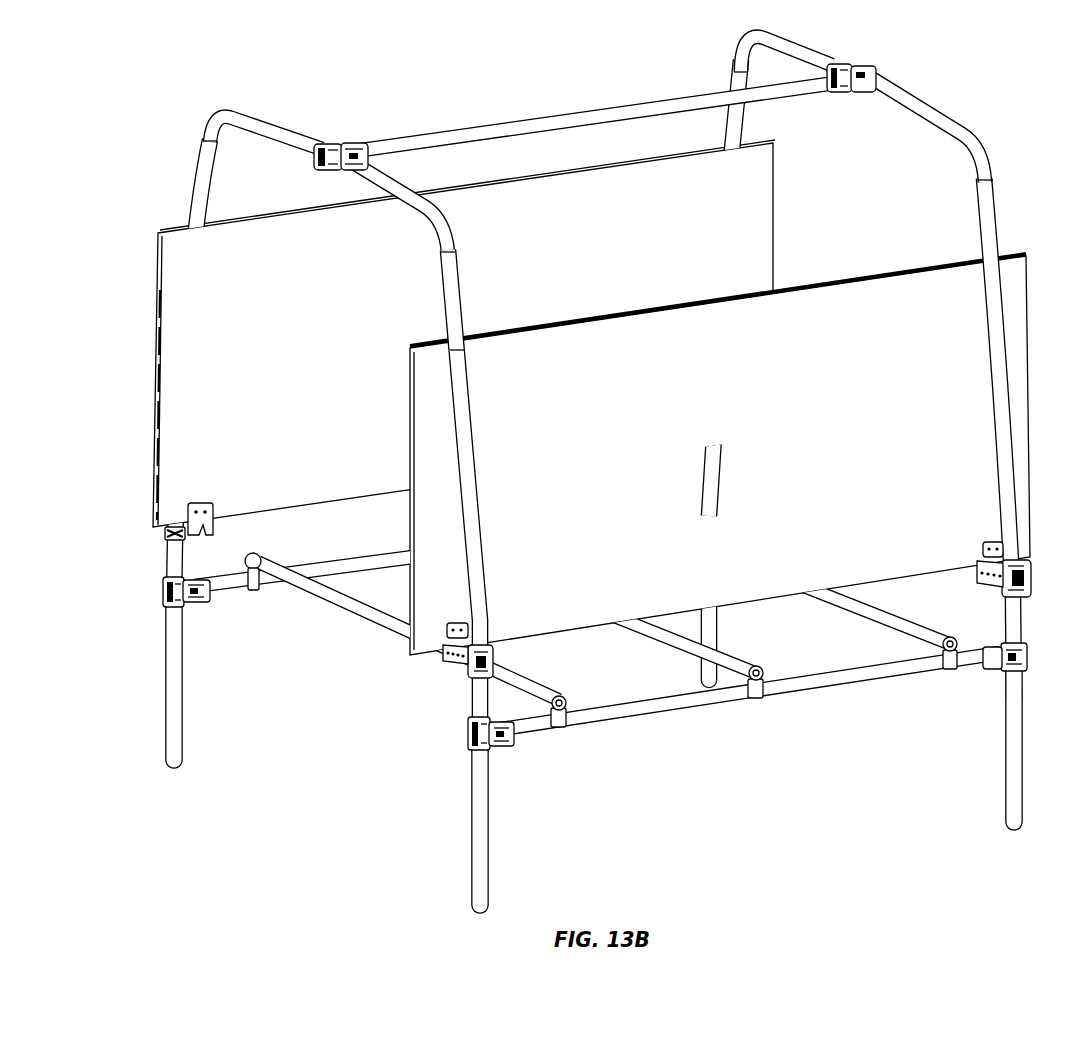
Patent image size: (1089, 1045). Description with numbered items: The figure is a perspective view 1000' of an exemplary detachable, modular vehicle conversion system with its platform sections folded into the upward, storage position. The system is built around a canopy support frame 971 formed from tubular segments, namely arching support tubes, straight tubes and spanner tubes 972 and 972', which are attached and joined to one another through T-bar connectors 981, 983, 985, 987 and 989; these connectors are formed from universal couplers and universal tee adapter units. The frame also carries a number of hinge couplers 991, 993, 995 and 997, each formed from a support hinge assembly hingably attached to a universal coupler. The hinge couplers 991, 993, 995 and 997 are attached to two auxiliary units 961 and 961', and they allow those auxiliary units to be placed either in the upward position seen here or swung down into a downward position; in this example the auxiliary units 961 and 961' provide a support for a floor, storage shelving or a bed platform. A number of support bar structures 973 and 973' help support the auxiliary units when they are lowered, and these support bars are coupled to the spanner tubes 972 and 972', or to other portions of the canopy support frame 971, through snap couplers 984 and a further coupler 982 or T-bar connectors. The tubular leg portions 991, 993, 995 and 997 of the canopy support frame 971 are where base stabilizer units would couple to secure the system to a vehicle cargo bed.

The view of conversion system 1000' is at (546, 470).
The canopy support frame 971 is at (1004, 219).
The spanner tube 972 is at (747, 694).
The spanner tube 972' is at (450, 548).
The support bar structure 973 is at (402, 626).
The support bar structure 973' is at (625, 612).
The T-bar connector 981 is at (332, 146).
The clip 982 is at (766, 698).
The T-bar connector 983 is at (858, 67).
The snap coupler 984 is at (570, 726).
The T-bar connector 985 is at (168, 596).
The T-bar connector 987 is at (468, 738).
The T-bar connector 989 is at (1030, 655).
The hinge coupler 991 is at (480, 822).
The hinge coupler 993 is at (1012, 742).
The hinge coupler 995 is at (728, 620).
The hinge coupler 997 is at (170, 692).
The auxiliary unit 961 is at (464, 333).
The auxiliary unit 961' is at (720, 454).